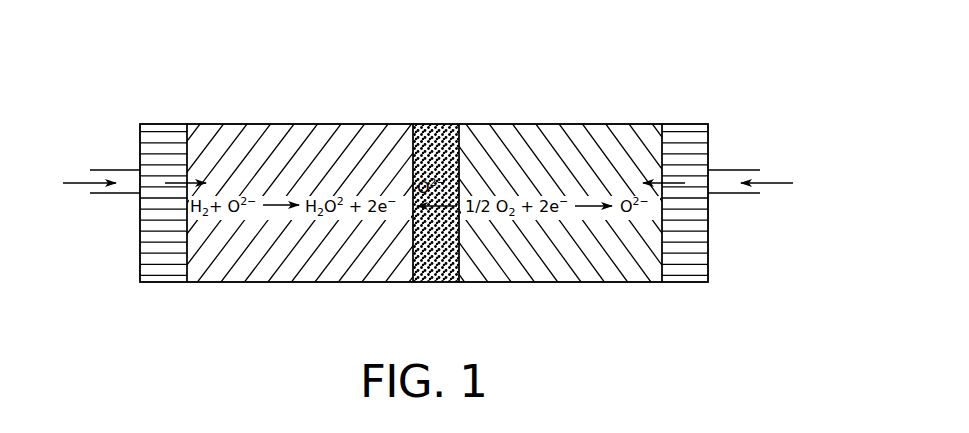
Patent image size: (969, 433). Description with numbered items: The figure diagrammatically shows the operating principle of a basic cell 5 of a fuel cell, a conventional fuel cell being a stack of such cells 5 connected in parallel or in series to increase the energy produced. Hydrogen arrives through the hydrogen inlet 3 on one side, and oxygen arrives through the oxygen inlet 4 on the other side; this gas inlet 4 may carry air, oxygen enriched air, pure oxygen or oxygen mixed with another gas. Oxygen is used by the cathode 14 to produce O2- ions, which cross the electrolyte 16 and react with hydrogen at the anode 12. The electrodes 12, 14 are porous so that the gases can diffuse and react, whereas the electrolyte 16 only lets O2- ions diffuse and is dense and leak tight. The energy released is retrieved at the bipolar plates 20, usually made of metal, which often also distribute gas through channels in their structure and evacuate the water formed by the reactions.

The basic cell 5 is at (538, 69).
The hydrogen inlet 3 is at (123, 186).
The oxygen inlet 4 is at (725, 186).
The anode 12 is at (259, 267).
The cathode 14 is at (608, 268).
The electrolyte 16 is at (432, 138).
The bipolar plates 20 is at (163, 135).